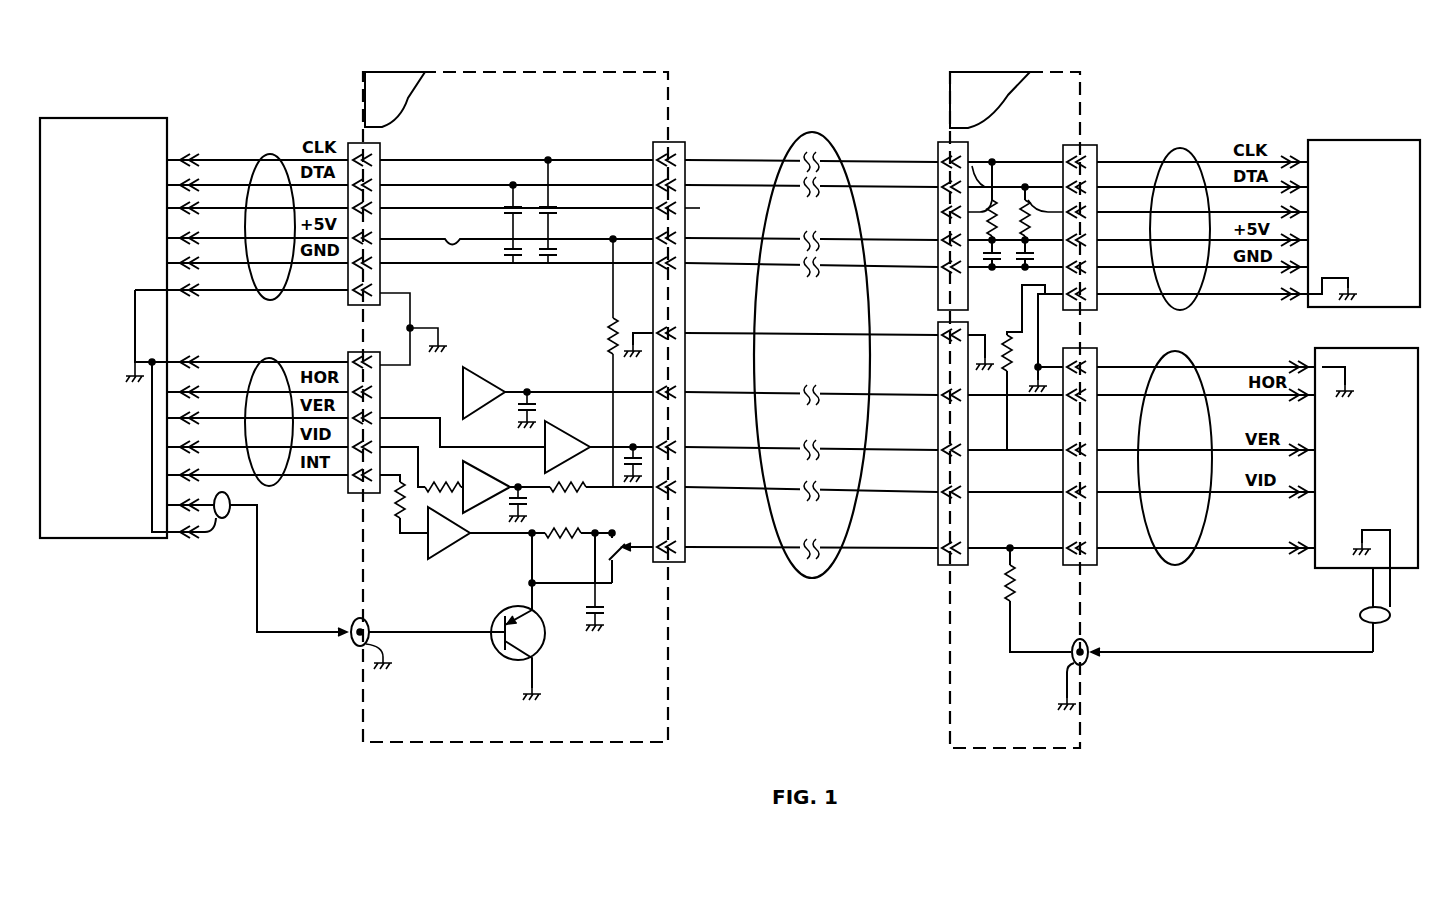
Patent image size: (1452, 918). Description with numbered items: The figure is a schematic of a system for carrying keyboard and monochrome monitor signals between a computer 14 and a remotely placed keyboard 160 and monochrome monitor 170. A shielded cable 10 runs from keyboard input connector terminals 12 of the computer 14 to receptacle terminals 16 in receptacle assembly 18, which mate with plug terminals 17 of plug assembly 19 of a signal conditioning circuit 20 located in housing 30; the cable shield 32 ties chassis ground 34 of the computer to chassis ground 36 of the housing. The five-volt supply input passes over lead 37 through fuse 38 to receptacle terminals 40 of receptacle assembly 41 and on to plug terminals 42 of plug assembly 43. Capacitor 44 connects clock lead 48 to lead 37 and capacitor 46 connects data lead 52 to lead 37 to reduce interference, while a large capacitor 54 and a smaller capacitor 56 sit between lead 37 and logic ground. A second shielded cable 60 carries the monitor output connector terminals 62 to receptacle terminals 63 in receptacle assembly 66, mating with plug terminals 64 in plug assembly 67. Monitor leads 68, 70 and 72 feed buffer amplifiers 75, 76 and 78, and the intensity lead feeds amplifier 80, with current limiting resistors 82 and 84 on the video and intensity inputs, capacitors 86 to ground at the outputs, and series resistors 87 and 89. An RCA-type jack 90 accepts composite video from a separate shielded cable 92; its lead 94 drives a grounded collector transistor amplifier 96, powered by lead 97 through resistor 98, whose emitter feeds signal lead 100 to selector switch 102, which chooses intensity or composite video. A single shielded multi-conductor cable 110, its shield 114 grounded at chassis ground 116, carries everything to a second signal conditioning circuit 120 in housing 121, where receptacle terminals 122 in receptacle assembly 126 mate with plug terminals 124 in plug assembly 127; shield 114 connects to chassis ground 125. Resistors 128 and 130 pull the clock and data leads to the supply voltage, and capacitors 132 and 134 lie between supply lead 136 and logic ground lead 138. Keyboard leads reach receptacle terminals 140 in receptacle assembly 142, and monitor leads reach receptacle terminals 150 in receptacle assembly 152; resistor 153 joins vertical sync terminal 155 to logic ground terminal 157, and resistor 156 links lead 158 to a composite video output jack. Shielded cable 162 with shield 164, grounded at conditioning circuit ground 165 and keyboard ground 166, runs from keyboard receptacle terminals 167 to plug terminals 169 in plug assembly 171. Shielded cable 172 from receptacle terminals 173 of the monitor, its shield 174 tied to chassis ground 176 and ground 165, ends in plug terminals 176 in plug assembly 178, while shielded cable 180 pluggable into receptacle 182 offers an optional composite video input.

The shielded cable 10 is at (275, 136).
The keyboard input connector terminals 12 is at (198, 150).
The computer 14 is at (80, 186).
The receptacle terminals 16 is at (352, 145).
The plug terminals 17 is at (384, 212).
The receptacle assembly 18 is at (362, 142).
The plug assembly 19 is at (378, 145).
The signal conditioning circuit 20 is at (534, 127).
The housing 30 is at (384, 72).
The cable shield 32 is at (265, 152).
The chassis ground 34 is at (128, 360).
The chassis ground 36 is at (442, 338).
The +5-volt lead 37 is at (418, 239).
The fuse 38 is at (449, 240).
The receptacle terminals 40 is at (655, 158).
The receptacle assembly 41 is at (655, 142).
The plug terminals 42 is at (678, 142).
The plug assembly 43 is at (682, 150).
The capacitor 44 is at (560, 207).
The capacitor 46 is at (505, 207).
The clock lead 48 is at (497, 160).
The data lead 52 is at (500, 185).
The capacitor 54 is at (505, 253).
The capacitor 56 is at (560, 253).
The second shielded cable 60 is at (281, 348).
The monitor output connector terminals 62 is at (196, 348).
The receptacle terminals 63 is at (352, 356).
The plug terminals 64 is at (378, 388).
The receptacle assembly 66 is at (352, 495).
The plug assembly 67 is at (375, 495).
The monitor lead 68 is at (431, 390).
The monitor lead 70 is at (405, 424).
The monitor lead 72 is at (396, 482).
The buffer amplifier 75 is at (489, 386).
The buffer amplifier 76 is at (565, 428).
The buffer amplifier 78 is at (487, 485).
The buffer amplifier 80 is at (455, 552).
The current limiting resistor 82 is at (440, 484).
The current limiting resistor 84 is at (400, 492).
The capacitors 86 is at (518, 412).
The resistor 87 is at (571, 486).
The resistor 89 is at (565, 532).
The RCA-type jack 90 is at (367, 624).
The shielded cable 92 is at (232, 503).
The lead 94 is at (417, 632).
The transistor amplifier 96 is at (538, 650).
The lead 97 is at (527, 578).
The resistor 98 is at (610, 335).
The signal lead 100 is at (614, 565).
The selector switch 102 is at (620, 541).
The shielded multi-conductor cable 110 is at (812, 134).
The shield 114 is at (797, 146).
The chassis ground 116 is at (634, 333).
The second signal conditioning circuit 120 is at (1034, 127).
The housing 121 is at (982, 72).
The receptacle terminals 122 is at (945, 162).
The plug terminals 124 is at (975, 160).
The chassis ground 125 is at (955, 395).
The receptacle assembly 126 is at (949, 142).
The plug assembly 127 is at (972, 500).
The resistor 128 is at (988, 215).
The resistor 130 is at (1030, 205).
The capacitor 132 is at (1015, 270).
The capacitor 134 is at (1022, 275).
The +5 volts lead 136 is at (388, 664).
The logic ground lead 138 is at (898, 272).
The receptacle terminals 140 is at (1065, 152).
The receptacle assembly 142 is at (1085, 145).
The receptacle terminals 150 is at (1062, 440).
The receptacle assembly 152 is at (1078, 580).
The resistor 153 is at (1015, 367).
The vertical sync terminal 155 is at (1007, 455).
The resistor 156 is at (1004, 586).
The logic ground terminal 157 is at (1098, 268).
The lead 158 is at (1018, 600).
The keyboard 160 is at (1348, 195).
The shielded cable 162 is at (1195, 150).
The shield 164 is at (1180, 150).
The conditioning circuit ground 165 is at (1058, 705).
The keyboard ground 166 is at (1362, 282).
The keyboard receptacle terminals 167 is at (1295, 150).
The plug terminals 169 is at (1100, 166).
The monochrome monitor 170 is at (1350, 418).
The plug assembly 171 is at (1100, 158).
The shielded cable 172 is at (1210, 570).
The receptacle terminals 173 is at (1290, 363).
The shield 174 is at (1175, 566).
The chassis ground 176 is at (1358, 372).
The plug assembly 178 is at (1088, 348).
The shielded cable 180 is at (1263, 652).
The receptacle 182 is at (1066, 668).